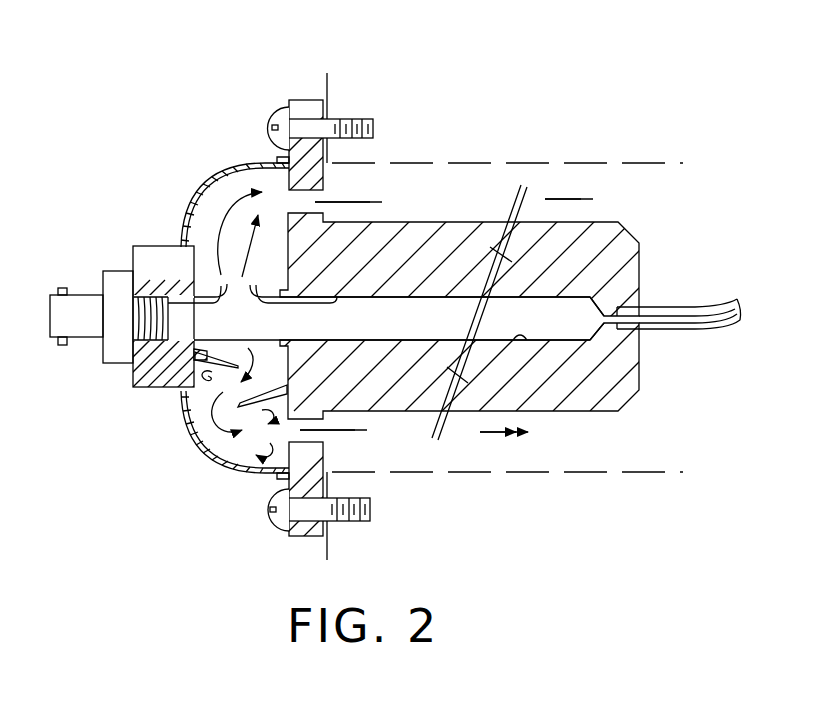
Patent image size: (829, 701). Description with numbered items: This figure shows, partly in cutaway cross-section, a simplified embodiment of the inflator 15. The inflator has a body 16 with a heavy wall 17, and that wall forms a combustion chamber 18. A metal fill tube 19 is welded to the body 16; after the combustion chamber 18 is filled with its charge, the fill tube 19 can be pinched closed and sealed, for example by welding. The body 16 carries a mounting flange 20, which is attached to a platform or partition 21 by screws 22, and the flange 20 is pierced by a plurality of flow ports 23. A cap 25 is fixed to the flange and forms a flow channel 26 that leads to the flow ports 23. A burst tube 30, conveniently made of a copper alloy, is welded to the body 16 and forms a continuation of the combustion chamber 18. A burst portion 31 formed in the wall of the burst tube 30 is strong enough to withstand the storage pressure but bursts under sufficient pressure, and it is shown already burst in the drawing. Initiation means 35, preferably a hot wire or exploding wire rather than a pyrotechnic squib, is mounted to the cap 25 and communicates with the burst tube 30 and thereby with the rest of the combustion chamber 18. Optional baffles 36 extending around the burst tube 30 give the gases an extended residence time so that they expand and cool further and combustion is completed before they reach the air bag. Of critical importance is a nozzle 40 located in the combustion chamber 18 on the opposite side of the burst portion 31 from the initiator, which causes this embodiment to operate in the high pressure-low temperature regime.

The inflator 15 is at (498, 125).
The body 16 is at (628, 234).
The heavy wall 17 is at (533, 341).
The combustion chamber 18 is at (568, 323).
The metal fill tube 19 is at (647, 300).
The mounting flange 20 is at (308, 540).
The platform or partition 21 is at (327, 85).
The screws 22 is at (363, 117).
The flow ports 23 is at (287, 203).
The cap 25 is at (183, 442).
The flow channel 26 is at (188, 197).
The burst tube 30 is at (137, 372).
The burst portion 31 is at (218, 258).
The initiation means 35 is at (82, 340).
The baffles 36 is at (236, 462).
The nozzle 40 is at (328, 303).